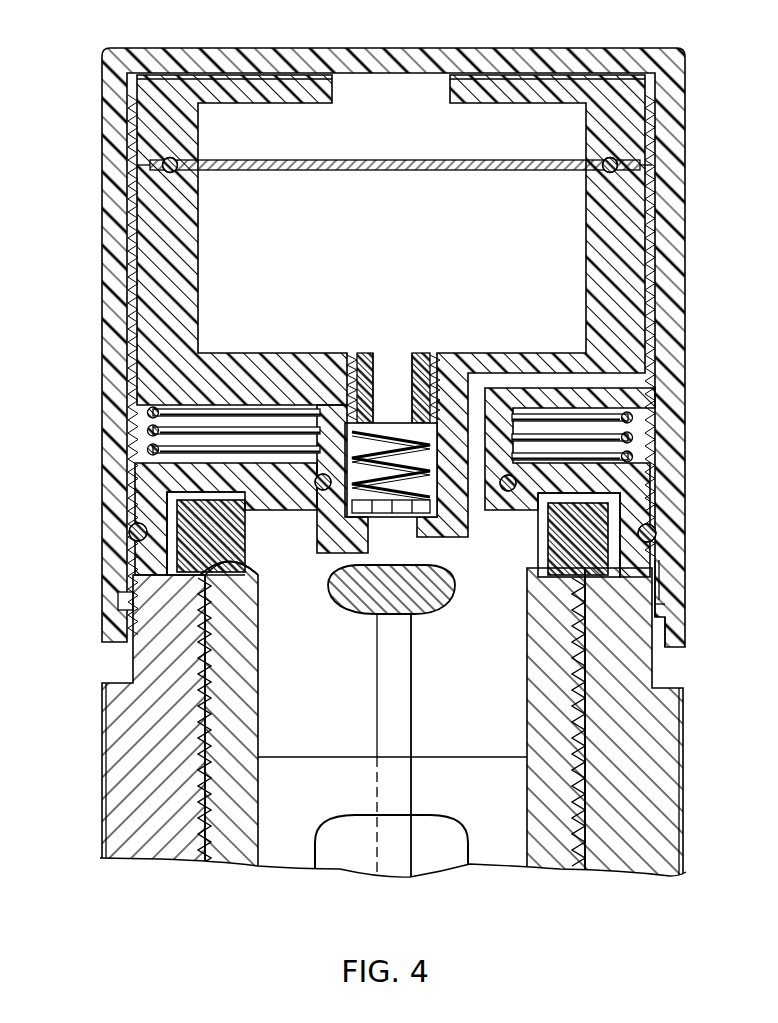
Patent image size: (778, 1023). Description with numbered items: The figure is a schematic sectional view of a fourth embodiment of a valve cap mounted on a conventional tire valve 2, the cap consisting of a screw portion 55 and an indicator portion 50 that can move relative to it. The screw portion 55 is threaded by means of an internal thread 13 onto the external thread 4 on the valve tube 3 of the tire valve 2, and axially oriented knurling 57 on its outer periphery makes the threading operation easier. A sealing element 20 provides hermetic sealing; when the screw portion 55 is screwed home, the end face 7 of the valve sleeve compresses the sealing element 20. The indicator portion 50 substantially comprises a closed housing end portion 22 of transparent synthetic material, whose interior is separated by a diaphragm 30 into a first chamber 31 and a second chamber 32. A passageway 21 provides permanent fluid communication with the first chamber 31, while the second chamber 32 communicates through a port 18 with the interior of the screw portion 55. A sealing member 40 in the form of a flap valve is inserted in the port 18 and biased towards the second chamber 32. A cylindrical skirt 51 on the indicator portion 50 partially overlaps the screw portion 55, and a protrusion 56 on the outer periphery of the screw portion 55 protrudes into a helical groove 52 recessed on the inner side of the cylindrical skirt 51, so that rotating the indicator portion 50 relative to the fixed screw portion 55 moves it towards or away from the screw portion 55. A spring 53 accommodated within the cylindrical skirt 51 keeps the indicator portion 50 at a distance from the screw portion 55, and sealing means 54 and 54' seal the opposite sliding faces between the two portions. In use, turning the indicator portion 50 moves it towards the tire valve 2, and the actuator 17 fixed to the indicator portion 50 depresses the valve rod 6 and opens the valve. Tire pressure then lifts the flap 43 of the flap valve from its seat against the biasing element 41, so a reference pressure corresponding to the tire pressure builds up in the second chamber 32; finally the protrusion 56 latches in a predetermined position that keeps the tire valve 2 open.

The tire valve 2 is at (305, 880).
The valve tube 3 is at (548, 848).
The external thread 4 is at (565, 852).
The valve rod 6 is at (345, 607).
The end face 7 is at (262, 573).
The internal thread 13 is at (582, 793).
The actuator 17 is at (325, 540).
The port 18 is at (385, 380).
The sealing element 20 is at (190, 518).
The passageway 21 is at (489, 78).
The closed housing end portion 22 is at (540, 62).
The diaphragm 30 is at (378, 172).
The first chamber 31 is at (368, 118).
The second chamber 32 is at (225, 268).
The sealing member 40 is at (400, 540).
The biasing element 41 is at (388, 420).
The flap 43 is at (405, 512).
The indicator portion 50 is at (665, 326).
The cylindrical skirt 51 is at (668, 571).
The groove 52 is at (668, 600).
The spring 53 is at (627, 434).
The sealing means 54 is at (685, 530).
The sealing means 54' is at (512, 510).
The screw portion 55 is at (658, 722).
The protrusion 56 is at (664, 627).
The knurling 57 is at (682, 760).